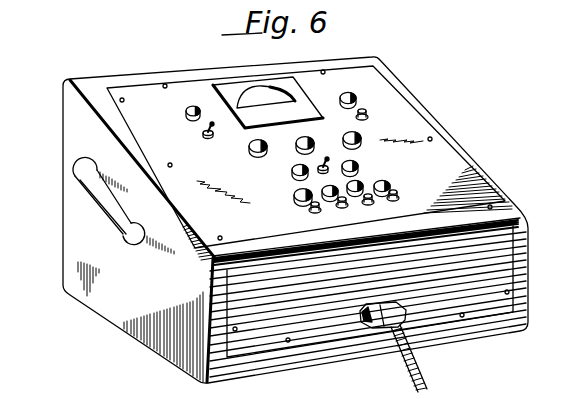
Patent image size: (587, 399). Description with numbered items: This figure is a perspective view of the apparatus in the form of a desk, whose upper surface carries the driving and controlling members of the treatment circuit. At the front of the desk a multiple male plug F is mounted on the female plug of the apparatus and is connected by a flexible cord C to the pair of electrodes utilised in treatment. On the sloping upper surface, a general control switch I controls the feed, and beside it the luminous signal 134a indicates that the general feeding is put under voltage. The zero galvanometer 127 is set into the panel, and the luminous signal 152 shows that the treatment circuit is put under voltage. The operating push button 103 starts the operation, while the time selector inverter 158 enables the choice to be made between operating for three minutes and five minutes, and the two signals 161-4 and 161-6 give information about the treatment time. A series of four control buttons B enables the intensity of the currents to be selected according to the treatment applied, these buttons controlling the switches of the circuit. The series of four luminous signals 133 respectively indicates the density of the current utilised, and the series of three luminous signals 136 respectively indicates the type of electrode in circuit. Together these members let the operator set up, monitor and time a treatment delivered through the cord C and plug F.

The luminous signal 134a is at (186, 114).
The general control switch I is at (203, 133).
The zero galvanometer 127 is at (255, 101).
The luminous signal 152 is at (356, 89).
The operating push button 103 is at (367, 113).
The series of three luminous signals 136 is at (343, 139).
The time selector inverter 158 is at (329, 158).
The signal 161-6 is at (353, 161).
The signal 161-4 is at (292, 173).
The series of four luminous signals 133 is at (322, 190).
The series of four control buttons B is at (335, 212).
The multiple male plug F is at (392, 306).
The flexible cord C is at (418, 362).